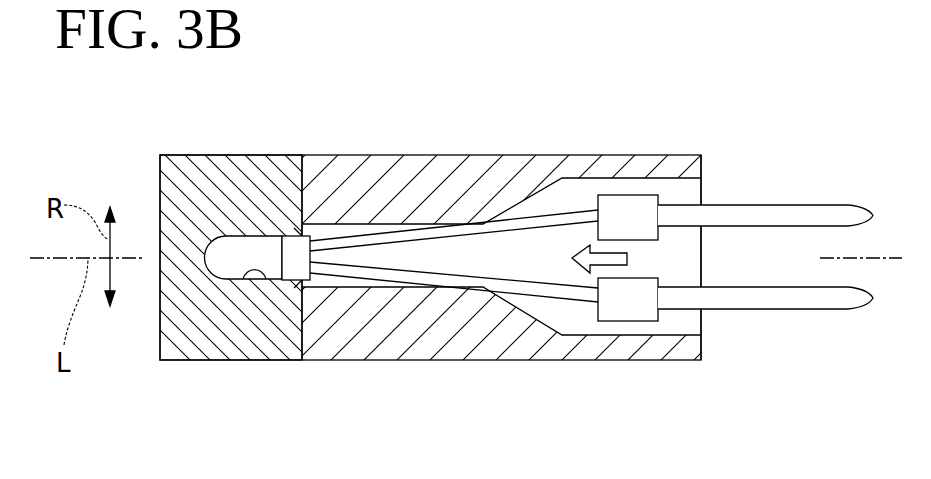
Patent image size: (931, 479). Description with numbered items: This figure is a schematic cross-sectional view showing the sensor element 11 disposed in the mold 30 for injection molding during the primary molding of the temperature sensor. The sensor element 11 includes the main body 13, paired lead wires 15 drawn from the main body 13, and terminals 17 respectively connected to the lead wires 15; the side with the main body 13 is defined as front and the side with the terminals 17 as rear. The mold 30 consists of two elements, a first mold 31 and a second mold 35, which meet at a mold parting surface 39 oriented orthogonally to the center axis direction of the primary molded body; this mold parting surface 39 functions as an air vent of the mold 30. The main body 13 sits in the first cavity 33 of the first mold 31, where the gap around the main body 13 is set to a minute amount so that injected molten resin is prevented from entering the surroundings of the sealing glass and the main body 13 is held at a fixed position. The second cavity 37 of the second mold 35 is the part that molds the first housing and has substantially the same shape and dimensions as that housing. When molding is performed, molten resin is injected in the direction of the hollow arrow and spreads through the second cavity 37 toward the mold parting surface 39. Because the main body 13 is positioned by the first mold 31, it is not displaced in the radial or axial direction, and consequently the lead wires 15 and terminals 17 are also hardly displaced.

The mold 30 is at (652, 142).
The first mold 31 is at (192, 166).
The second mold 35 is at (474, 155).
The main body 13 is at (241, 236).
The first cavity 33 is at (264, 280).
The mold parting surface 39 is at (296, 236).
The sensor element 11 is at (341, 222).
The lead wires 15 is at (577, 211).
The terminals 17 is at (770, 205).
The second cavity 37 is at (555, 274).